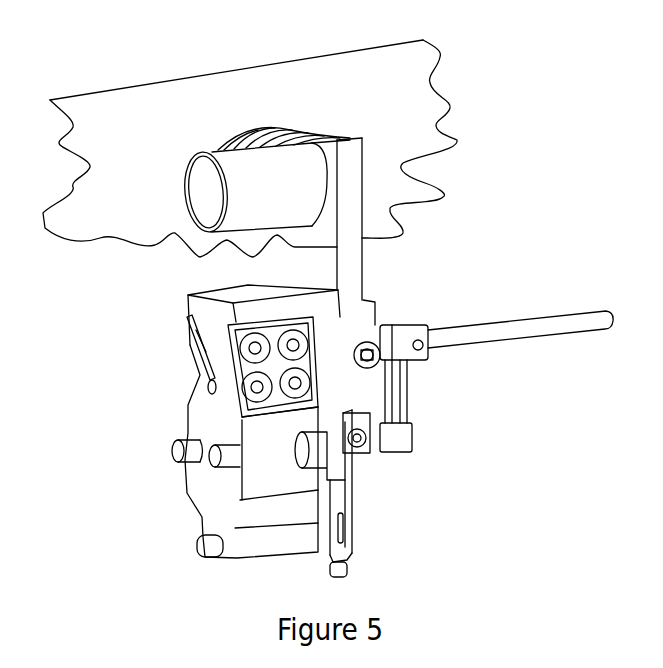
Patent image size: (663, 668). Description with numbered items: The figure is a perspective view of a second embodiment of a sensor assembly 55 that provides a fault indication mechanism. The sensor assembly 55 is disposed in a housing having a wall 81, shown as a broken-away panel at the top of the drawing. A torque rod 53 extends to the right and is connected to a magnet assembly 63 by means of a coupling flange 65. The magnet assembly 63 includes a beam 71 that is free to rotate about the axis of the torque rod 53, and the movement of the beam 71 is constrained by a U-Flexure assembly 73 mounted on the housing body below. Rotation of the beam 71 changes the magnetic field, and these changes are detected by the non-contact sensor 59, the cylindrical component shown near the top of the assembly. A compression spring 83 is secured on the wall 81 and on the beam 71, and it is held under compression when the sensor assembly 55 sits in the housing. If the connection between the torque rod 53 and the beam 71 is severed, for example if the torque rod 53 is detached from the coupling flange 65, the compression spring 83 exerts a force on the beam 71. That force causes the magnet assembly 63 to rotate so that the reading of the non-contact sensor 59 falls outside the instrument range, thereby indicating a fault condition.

The sensor assembly 55 is at (268, 28).
The torque rod 53 is at (523, 322).
The non-contact sensor 59 is at (213, 152).
The magnet assembly 63 is at (333, 94).
The coupling flange 65 is at (402, 323).
The beam 71 is at (367, 272).
The U-Flexure assembly 73 is at (202, 359).
The wall 81 is at (436, 125).
The compression spring 83 is at (243, 128).